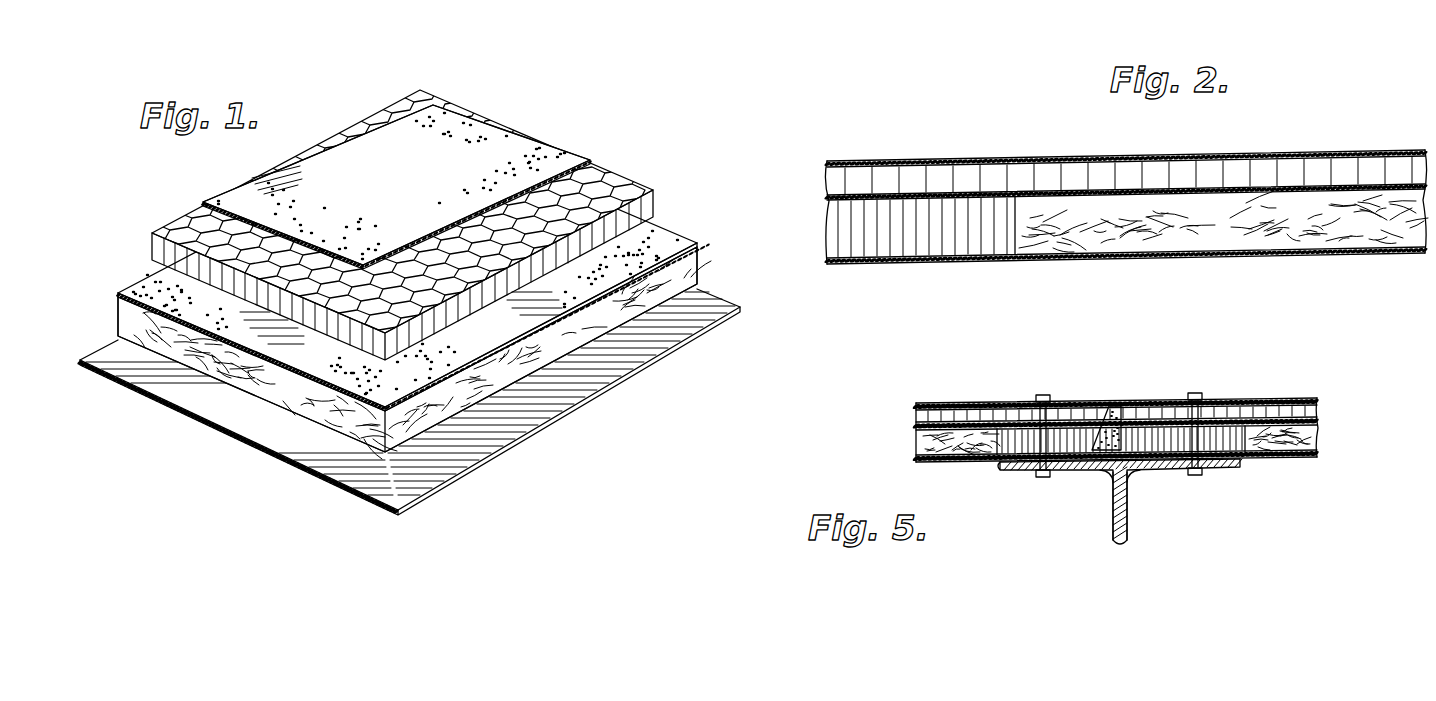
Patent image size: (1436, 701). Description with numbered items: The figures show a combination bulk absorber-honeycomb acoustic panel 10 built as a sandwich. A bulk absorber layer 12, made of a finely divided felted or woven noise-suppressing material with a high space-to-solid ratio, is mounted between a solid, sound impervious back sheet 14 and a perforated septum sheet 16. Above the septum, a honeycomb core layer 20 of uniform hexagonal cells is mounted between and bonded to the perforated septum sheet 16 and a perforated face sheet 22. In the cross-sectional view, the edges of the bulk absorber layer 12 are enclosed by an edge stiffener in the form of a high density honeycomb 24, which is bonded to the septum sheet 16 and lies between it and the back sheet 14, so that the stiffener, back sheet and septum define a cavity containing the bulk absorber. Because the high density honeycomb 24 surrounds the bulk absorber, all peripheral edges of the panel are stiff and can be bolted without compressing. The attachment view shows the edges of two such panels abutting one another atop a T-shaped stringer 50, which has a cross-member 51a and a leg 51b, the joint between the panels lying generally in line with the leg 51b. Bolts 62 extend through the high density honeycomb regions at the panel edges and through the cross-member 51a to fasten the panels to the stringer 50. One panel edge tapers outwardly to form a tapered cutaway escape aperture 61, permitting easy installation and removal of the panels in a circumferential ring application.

In FIG. 1, the combination bulk absorber-honeycomb acoustic panel 10 is at (594, 137).
In FIG. 2, the combination bulk absorber-honeycomb acoustic panel 10 is at (960, 157).
In FIG. 1, the bulk absorber layer 12 is at (690, 263).
In FIG. 2, the bulk absorber layer 12 is at (1215, 235).
In FIG. 5, the bulk absorber layer 12 is at (918, 438).
In FIG. 1, the back sheet 14 is at (710, 305).
In FIG. 2, the back sheet 14 is at (1083, 262).
In FIG. 5, the back sheet 14 is at (982, 458).
In FIG. 1, the perforated septum sheet 16 is at (665, 238).
In FIG. 2, the perforated septum sheet 16 is at (1045, 195).
In FIG. 5, the perforated septum sheet 16 is at (988, 412).
In FIG. 1, the honeycomb core layer 20 is at (615, 180).
In FIG. 2, the honeycomb core layer 20 is at (1330, 180).
In FIG. 5, the honeycomb core layer 20 is at (1012, 416).
In FIG. 1, the perforated face sheet 22 is at (482, 132).
In FIG. 2, the perforated face sheet 22 is at (1258, 158).
In FIG. 5, the perforated face sheet 22 is at (948, 404).
In FIG. 2, the high density honeycomb 24 is at (925, 236).
In FIG. 5, the high density honeycomb 24 is at (1025, 448).
In FIG. 5, the stringer 50 is at (1105, 538).
In FIG. 5, the cross-member 51a is at (1088, 473).
In FIG. 5, the leg 51b is at (1131, 528).
In FIG. 5, the tapered cutaway escape aperture 61 is at (1094, 426).
In FIG. 5, the bolts 62 is at (1046, 397).